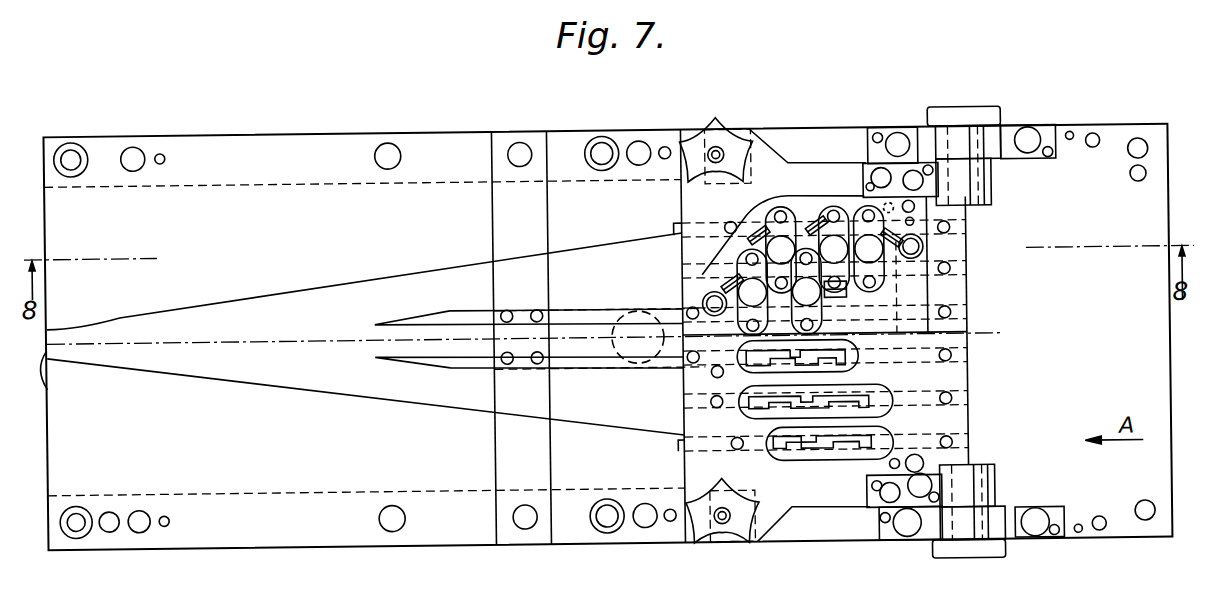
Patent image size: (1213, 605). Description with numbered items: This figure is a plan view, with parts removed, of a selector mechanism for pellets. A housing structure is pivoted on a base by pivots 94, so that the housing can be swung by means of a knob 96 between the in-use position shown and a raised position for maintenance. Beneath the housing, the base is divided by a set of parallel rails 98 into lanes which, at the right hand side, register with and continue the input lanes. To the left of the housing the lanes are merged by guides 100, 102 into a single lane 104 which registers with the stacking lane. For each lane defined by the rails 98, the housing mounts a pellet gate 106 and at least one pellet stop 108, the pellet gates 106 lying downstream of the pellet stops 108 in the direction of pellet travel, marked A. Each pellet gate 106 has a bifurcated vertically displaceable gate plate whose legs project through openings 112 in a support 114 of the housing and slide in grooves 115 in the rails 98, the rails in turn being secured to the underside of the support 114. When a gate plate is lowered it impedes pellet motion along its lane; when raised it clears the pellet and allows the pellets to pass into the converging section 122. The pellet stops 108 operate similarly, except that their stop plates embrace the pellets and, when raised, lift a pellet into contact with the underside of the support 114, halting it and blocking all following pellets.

The pivots 94 is at (970, 190).
The knob 96 is at (626, 313).
The parallel rails 98 is at (703, 271).
The guide 100 is at (587, 358).
The guide 102 is at (365, 280).
The single lane 104 is at (69, 381).
The pellet gate 106 is at (782, 249).
The pellet stop 108 is at (842, 328).
The openings 112 is at (880, 435).
The support 114 is at (960, 386).
The grooves 115 is at (700, 403).
The converging section 122 is at (310, 333).